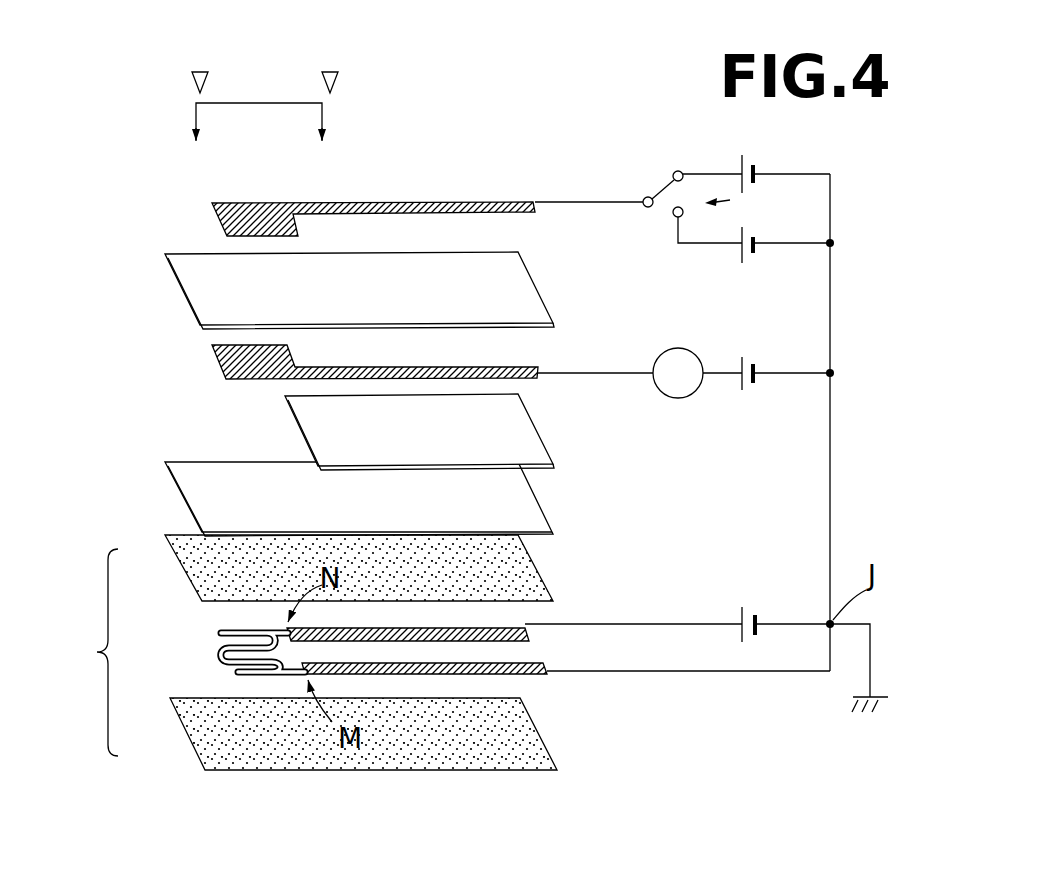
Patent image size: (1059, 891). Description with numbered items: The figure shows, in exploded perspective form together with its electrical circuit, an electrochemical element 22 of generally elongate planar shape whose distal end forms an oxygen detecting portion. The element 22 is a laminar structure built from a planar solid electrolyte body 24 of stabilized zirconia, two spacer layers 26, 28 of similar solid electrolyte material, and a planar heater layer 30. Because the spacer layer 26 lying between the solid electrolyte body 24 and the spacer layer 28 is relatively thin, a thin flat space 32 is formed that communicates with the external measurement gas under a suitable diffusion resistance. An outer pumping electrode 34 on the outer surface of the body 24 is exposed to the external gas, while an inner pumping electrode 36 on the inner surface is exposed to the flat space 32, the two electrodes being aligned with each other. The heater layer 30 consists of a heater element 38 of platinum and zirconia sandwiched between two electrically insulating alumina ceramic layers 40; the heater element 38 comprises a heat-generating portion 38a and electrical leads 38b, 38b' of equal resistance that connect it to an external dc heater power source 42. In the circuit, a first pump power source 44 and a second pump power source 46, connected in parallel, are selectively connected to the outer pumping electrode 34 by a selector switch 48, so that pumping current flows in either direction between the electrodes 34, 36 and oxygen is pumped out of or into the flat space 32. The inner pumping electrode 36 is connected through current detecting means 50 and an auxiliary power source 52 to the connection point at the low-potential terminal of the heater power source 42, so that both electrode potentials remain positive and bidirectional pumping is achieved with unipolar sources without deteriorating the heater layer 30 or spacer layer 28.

The electrochemical element 22 is at (138, 203).
The planar solid electrolyte body 24 is at (512, 280).
The spacer layer 26 is at (513, 427).
The spacer layer 28 is at (522, 503).
The heater layer 30 is at (88, 652).
The thin flat space 32 is at (222, 446).
The outer pumping electrode 34 is at (256, 210).
The inner pumping electrode 36 is at (235, 358).
The heater element 38 is at (207, 648).
The heat-generating portion 38a is at (262, 676).
The electrical lead 38b is at (514, 610).
The electrical lead 38b' is at (566, 695).
The electrically insulating ceramic layer 40 is at (197, 568).
The heater power source 42 is at (740, 657).
The first pump power source 44 is at (732, 153).
The second pump power source 46 is at (730, 263).
The selector switch 48 is at (643, 178).
The current detecting means 50 is at (688, 398).
The auxiliary power source 52 is at (750, 395).